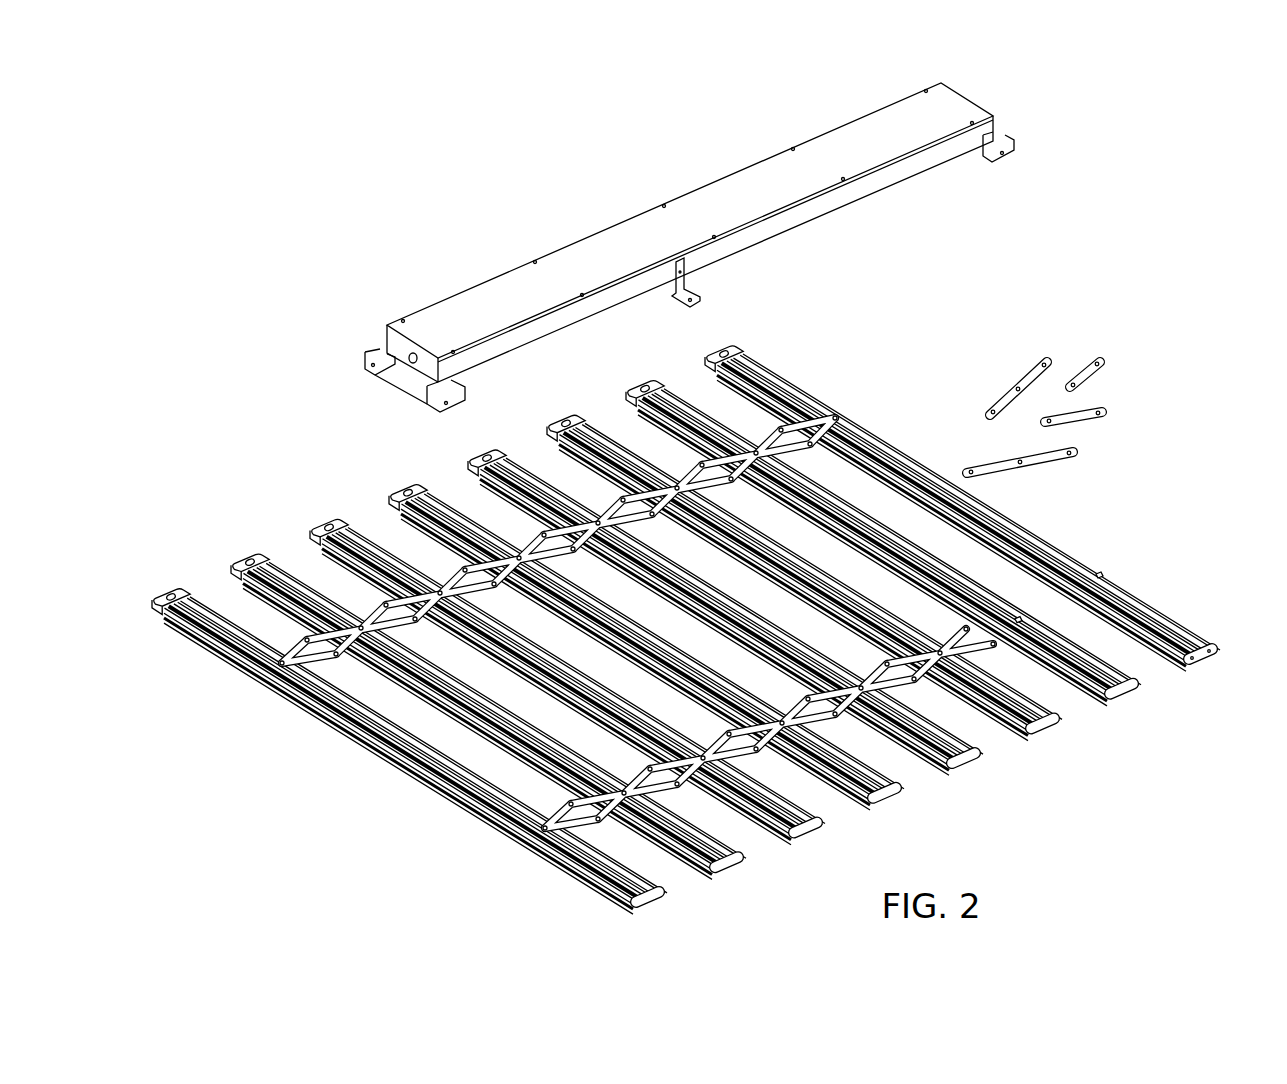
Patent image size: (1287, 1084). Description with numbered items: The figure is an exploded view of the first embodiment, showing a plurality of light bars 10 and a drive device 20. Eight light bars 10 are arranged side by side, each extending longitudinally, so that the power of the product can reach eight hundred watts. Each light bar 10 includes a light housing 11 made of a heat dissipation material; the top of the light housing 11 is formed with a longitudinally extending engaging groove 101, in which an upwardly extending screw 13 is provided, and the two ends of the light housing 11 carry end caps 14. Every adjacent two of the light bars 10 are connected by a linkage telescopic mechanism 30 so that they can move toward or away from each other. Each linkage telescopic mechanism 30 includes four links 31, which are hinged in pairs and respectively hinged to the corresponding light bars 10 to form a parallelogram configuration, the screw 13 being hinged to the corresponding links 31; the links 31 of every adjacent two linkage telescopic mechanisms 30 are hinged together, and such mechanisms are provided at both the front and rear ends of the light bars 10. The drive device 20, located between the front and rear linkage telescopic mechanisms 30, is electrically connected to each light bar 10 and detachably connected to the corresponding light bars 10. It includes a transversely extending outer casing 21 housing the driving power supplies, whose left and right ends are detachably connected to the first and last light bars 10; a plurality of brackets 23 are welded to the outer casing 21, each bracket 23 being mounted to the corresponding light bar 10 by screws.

The light bar 10 is at (704, 630).
The light housing 11 is at (980, 508).
The screw 13 is at (1085, 538).
The end cap 14 is at (1222, 618).
The engaging groove 101 is at (972, 506).
The drive device 20 is at (689, 247).
The outer casing 21 is at (815, 163).
The bracket 23 is at (988, 168).
The linkage telescopic mechanism 30 is at (1085, 381).
The link 31 is at (1083, 362).